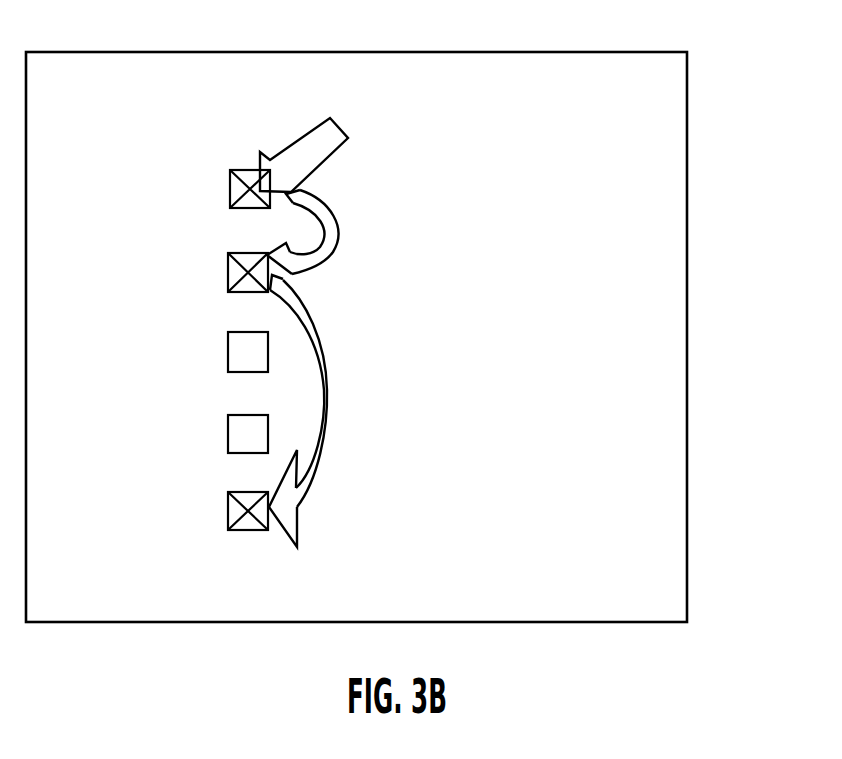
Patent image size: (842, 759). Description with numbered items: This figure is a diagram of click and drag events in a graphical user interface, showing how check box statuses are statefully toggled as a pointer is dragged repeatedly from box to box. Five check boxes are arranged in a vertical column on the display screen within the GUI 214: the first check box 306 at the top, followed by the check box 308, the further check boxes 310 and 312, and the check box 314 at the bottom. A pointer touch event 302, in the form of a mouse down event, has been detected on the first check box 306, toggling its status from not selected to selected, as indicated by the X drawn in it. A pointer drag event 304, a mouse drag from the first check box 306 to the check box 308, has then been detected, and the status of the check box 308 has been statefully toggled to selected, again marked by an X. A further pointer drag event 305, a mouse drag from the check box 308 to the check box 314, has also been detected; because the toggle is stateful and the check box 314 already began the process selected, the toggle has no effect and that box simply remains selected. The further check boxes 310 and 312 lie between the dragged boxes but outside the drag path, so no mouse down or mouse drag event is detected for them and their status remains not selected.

The GUI 214 is at (688, 605).
The pointer touch event 302 is at (348, 138).
The pointer drag event 304 is at (340, 237).
The further pointer drag event 305 is at (327, 452).
The first check box 306 is at (230, 188).
The check box 308 is at (228, 267).
The further check box 310 is at (228, 340).
The further check box 312 is at (228, 426).
The check box 314 is at (228, 510).